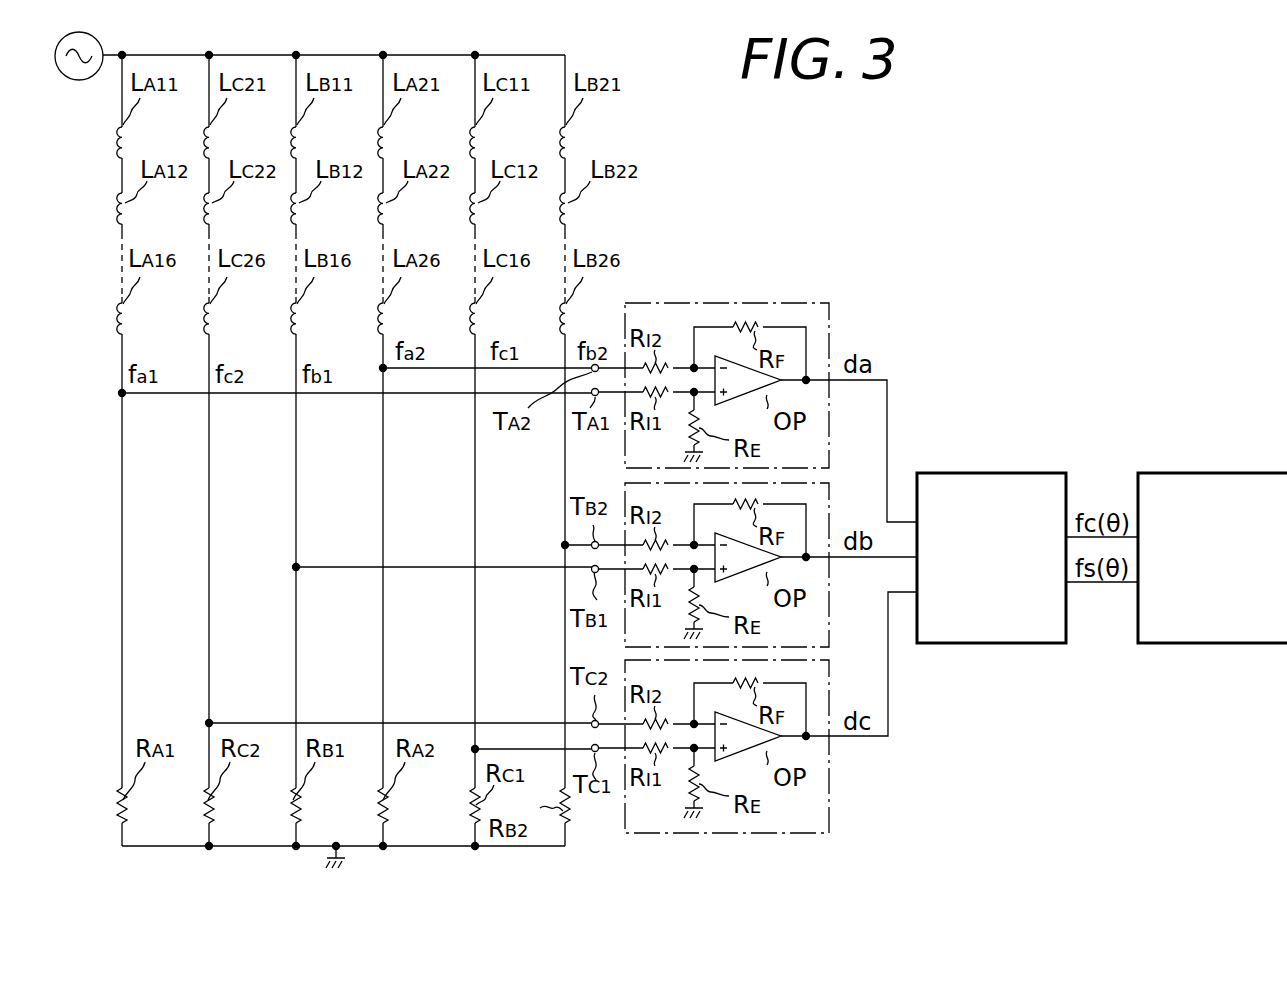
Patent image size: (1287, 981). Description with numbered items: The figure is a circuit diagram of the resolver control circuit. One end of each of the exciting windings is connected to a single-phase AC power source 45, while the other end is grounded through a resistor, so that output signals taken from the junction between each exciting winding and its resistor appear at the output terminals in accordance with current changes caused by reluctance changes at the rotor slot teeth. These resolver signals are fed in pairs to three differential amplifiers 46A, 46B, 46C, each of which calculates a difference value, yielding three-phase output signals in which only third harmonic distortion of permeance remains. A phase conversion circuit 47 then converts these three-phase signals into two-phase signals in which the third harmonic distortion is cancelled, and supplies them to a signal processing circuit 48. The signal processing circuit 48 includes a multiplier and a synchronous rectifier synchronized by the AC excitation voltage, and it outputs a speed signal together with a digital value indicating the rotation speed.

The single-phase AC power source 45 is at (80, 80).
The differential amplifier 46A is at (835, 323).
The differential amplifier 46B is at (833, 512).
The differential amplifier 46C is at (830, 811).
The phase conversion circuit 47 is at (988, 472).
The signal processing circuit 48 is at (1210, 472).